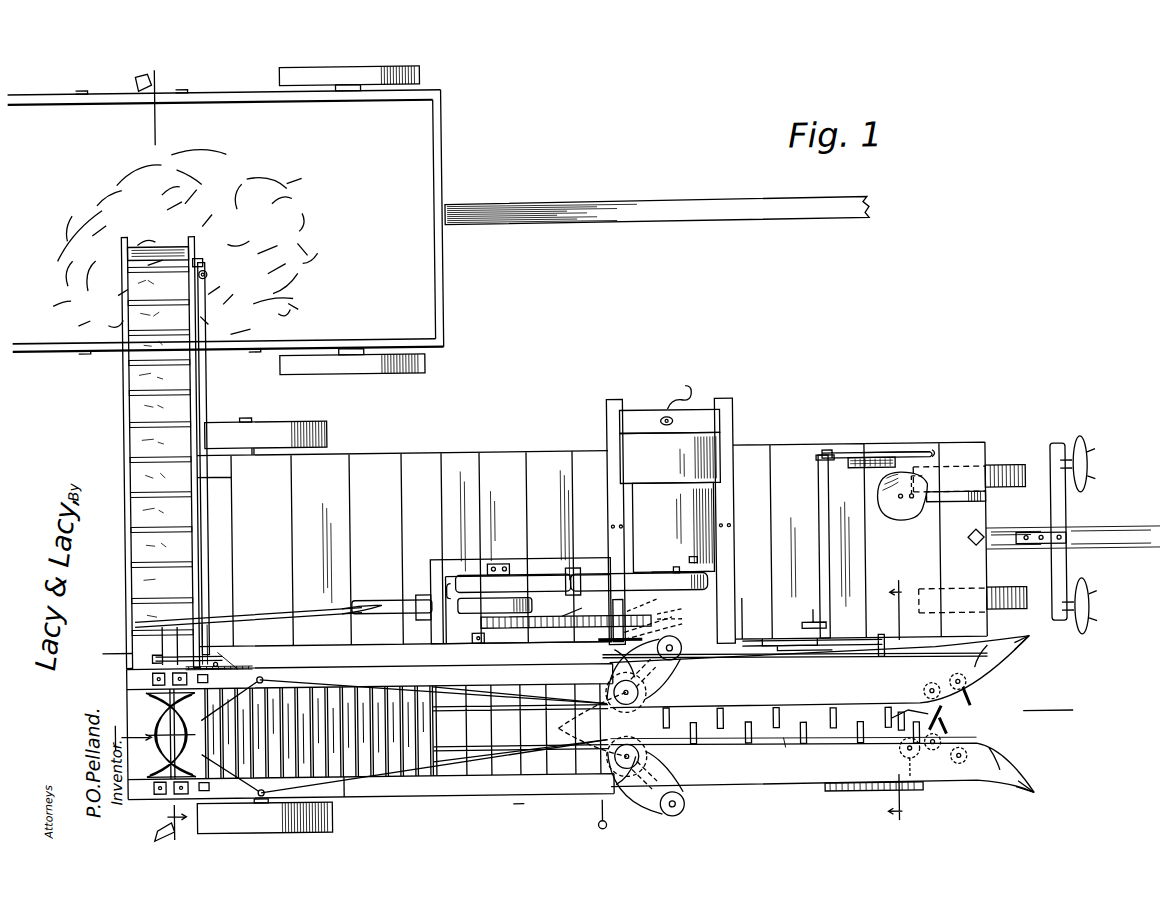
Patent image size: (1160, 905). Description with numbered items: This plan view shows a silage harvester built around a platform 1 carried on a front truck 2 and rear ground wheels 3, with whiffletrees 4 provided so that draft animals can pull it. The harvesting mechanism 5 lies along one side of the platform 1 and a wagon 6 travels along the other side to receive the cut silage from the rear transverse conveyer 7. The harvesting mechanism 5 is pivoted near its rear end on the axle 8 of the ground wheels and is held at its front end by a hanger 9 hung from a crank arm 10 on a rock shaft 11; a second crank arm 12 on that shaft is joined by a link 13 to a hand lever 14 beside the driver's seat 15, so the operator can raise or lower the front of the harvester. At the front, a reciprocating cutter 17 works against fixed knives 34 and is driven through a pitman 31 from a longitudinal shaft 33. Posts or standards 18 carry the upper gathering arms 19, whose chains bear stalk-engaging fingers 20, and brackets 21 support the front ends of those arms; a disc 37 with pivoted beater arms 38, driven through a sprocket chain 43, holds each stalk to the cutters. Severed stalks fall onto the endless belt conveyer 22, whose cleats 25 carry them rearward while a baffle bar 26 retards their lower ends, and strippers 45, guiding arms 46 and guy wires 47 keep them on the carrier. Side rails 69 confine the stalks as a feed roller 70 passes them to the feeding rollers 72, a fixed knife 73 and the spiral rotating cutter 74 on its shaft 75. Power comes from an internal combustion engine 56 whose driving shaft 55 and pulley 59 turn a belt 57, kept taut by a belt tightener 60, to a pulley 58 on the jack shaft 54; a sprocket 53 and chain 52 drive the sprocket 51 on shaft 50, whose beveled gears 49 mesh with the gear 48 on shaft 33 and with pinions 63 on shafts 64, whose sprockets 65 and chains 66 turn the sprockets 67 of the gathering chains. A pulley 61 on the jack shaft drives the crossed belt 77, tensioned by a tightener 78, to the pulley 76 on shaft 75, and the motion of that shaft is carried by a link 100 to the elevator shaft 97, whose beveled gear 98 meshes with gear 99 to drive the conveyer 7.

The platform 1 is at (430, 439).
The front truck 2 is at (970, 530).
The rear ground wheels 3 is at (597, 579).
The whiffletrees 4 is at (1086, 468).
The harvesting mechanism 5 is at (706, 698).
The wagon 6 is at (236, 221).
The rear transverse conveyer 7 is at (323, 648).
The axle 8 is at (254, 452).
The link or hanger 9 is at (780, 646).
The crank arm 10 is at (811, 625).
The rock shaft 11 is at (818, 531).
The crank arm 12 is at (840, 453).
The link 13 is at (872, 461).
The hand lever 14 is at (912, 455).
The driver's seat 15 is at (910, 520).
The reciprocating cutter 17 is at (900, 716).
The posts or standards 18 is at (545, 658).
The upper gathering arms 19 is at (743, 686).
The stalk-engaging fingers 20 is at (806, 710).
The brackets 21 is at (1022, 650).
The endless belt conveyer 22 is at (319, 732).
The transverse bars or cleats 25 is at (340, 780).
The bridge or baffle bar 26 is at (858, 712).
The pitman 31 is at (884, 648).
The longitudinal shaft 33 is at (740, 638).
The fixed knives 34 is at (895, 715).
The disc 37 is at (896, 752).
The beater arms 38 is at (940, 716).
The sprocket chain 43 is at (842, 795).
The guards or strippers 45 is at (636, 695).
The guiding arms 46 is at (494, 748).
The guy wires or braces 47 is at (446, 690).
The beveled gear 48 is at (662, 626).
The beveled gears or pinions 49 is at (621, 620).
The shaft 50 is at (683, 606).
The sprocket wheel 51 is at (657, 603).
The sprocket chain 52 is at (590, 622).
The sprocket 53 is at (479, 621).
The jack shaft 54 is at (497, 563).
The driving shaft 55 is at (673, 568).
The internal combustion engine 56 is at (670, 515).
The belt 57 is at (538, 575).
The pulley 58 is at (452, 584).
The pulley 59 is at (697, 562).
The belt tightener 60 is at (576, 570).
The pulley 61 is at (506, 601).
The beveled pinion 63 is at (596, 643).
The shaft 64 is at (612, 662).
The sprocket 65 is at (680, 655).
The sprocket chain 66 is at (650, 660).
The sprocket 67 is at (635, 682).
The side rails 69 is at (405, 690).
The feed roller 70 is at (262, 676).
The feeding and supporting rollers 72 is at (264, 816).
The fixed knife 73 is at (248, 652).
The rotating knife or cutter 74 is at (146, 700).
The cutter shaft 75 is at (160, 637).
The pulley 76 is at (207, 630).
The crossed belt 77 is at (245, 612).
The tightener 78 is at (418, 600).
The shaft 97 is at (208, 368).
The beveled gear 98 is at (210, 270).
The beveled gear 99 is at (205, 256).
The link 100 is at (216, 658).